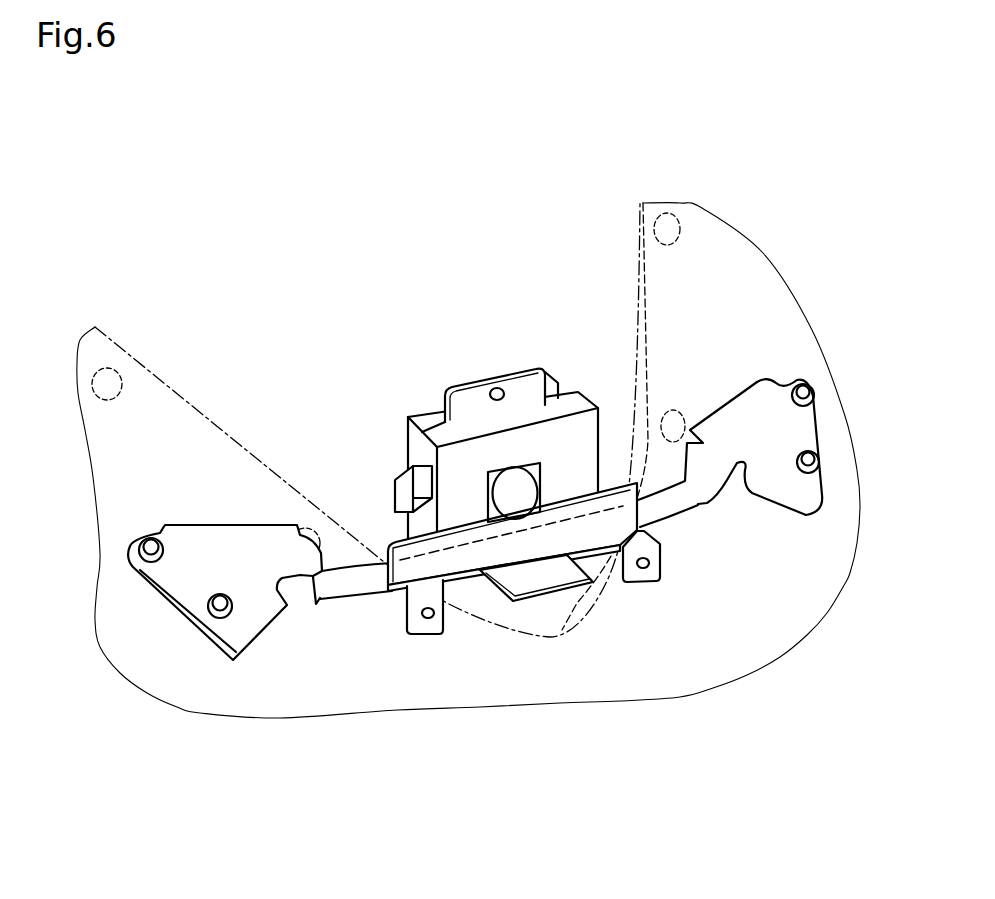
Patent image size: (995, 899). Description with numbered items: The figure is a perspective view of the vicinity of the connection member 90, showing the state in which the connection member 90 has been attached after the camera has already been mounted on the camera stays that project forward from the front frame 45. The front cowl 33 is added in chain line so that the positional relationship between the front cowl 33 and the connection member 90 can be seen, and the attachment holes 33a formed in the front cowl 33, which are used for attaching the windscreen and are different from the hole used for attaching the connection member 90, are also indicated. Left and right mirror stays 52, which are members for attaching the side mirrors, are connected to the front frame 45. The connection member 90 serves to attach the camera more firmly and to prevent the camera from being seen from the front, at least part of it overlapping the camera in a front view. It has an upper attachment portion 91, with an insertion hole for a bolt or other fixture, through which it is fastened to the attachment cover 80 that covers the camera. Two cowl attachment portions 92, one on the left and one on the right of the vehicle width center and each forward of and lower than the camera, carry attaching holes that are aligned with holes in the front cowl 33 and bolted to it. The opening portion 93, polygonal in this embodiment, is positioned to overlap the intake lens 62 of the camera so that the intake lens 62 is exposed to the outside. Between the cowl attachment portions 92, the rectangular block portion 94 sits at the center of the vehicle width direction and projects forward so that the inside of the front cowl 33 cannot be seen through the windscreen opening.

The front cowl 33 is at (175, 392).
The attachment hole 33a is at (110, 372).
The front frame 45 is at (357, 590).
The mirror stay 52 is at (263, 613).
The intake lens 62 is at (539, 491).
The attachment cover 80 is at (403, 419).
The connection member 90 is at (492, 328).
The upper attachment portion 91 is at (515, 387).
The cowl attachment portion 92 is at (431, 622).
The opening portion 93 is at (490, 477).
The block portion 94 is at (537, 588).